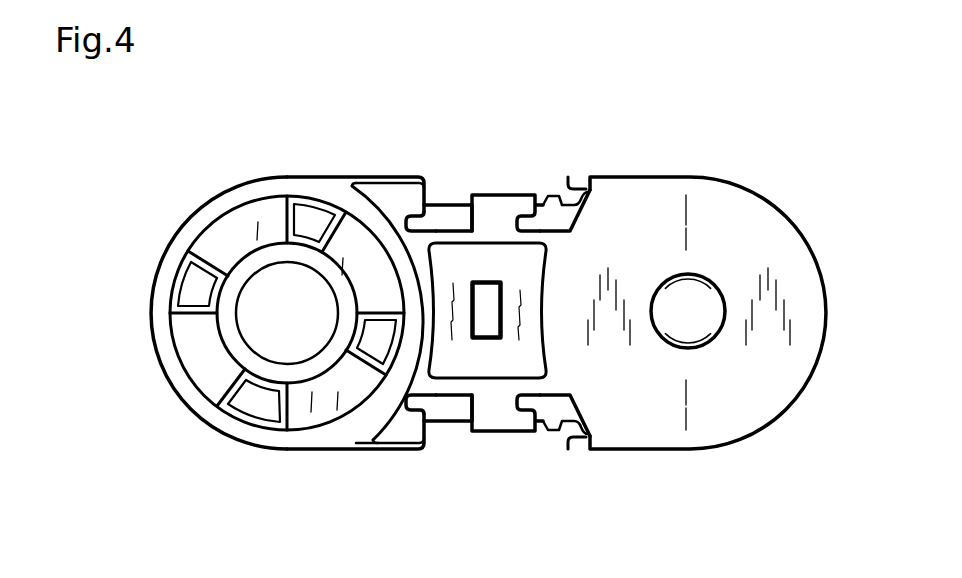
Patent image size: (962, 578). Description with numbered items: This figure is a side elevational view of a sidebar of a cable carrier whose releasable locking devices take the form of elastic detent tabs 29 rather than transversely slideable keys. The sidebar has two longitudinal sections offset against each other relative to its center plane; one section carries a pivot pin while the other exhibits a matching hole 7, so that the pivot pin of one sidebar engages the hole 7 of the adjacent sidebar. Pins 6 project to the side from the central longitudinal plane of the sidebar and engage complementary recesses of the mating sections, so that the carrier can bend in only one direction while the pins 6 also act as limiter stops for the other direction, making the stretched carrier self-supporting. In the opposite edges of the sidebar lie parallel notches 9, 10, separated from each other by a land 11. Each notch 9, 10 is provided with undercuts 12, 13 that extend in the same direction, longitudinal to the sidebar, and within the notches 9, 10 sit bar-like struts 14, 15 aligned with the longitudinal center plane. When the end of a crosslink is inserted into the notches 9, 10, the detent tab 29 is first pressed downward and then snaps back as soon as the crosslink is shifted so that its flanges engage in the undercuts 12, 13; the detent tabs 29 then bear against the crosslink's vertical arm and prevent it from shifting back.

The pins 6 is at (171, 307).
The hole 7 is at (257, 338).
The notch 9 is at (543, 195).
The notch 10 is at (443, 196).
The land 11 is at (497, 205).
The undercut 12 is at (410, 408).
The undercut 13 is at (513, 406).
The bar-like strut 14 is at (455, 213).
The bar-like strut 15 is at (543, 407).
The detent tab 29 is at (556, 430).